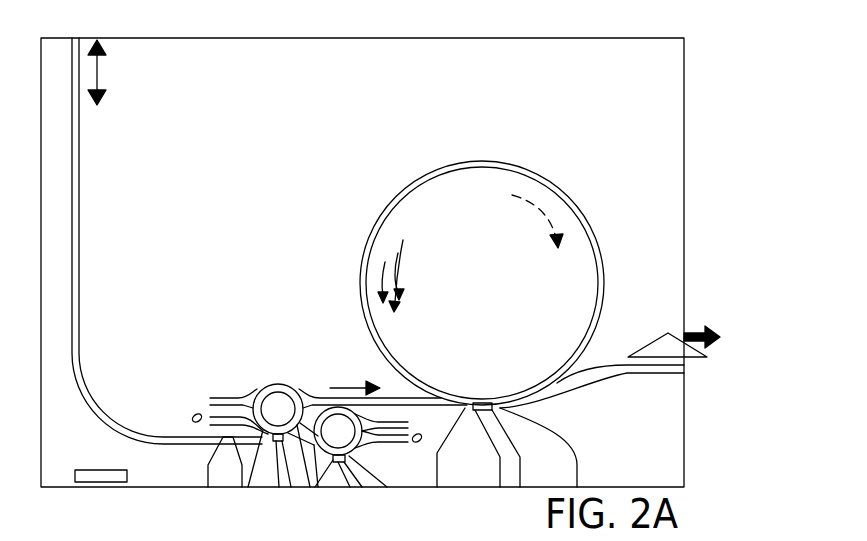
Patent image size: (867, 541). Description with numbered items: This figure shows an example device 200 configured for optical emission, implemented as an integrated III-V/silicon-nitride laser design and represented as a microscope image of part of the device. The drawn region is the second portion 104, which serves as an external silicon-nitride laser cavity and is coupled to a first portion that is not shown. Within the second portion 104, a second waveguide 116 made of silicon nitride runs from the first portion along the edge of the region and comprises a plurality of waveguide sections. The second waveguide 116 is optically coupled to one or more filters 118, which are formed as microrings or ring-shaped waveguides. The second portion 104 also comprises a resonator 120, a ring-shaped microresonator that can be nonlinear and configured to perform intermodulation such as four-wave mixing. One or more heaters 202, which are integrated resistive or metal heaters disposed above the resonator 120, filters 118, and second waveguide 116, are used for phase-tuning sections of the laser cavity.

The example device 200 is at (707, 70).
The second portion 104 is at (370, 81).
The second waveguide 116 is at (80, 222).
The filters 118 is at (276, 385).
The resonator 120 is at (568, 200).
The heaters 202 is at (463, 506).